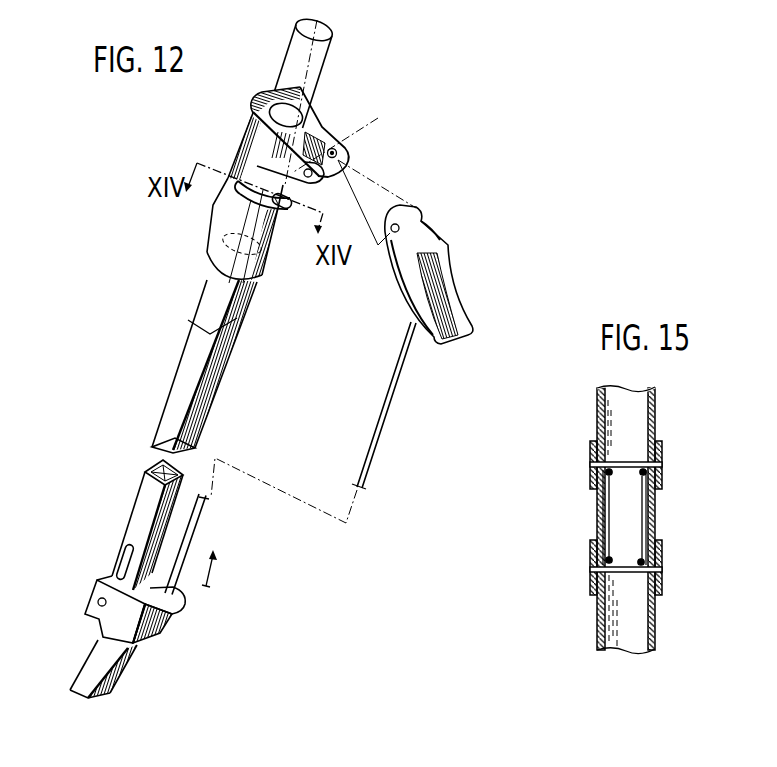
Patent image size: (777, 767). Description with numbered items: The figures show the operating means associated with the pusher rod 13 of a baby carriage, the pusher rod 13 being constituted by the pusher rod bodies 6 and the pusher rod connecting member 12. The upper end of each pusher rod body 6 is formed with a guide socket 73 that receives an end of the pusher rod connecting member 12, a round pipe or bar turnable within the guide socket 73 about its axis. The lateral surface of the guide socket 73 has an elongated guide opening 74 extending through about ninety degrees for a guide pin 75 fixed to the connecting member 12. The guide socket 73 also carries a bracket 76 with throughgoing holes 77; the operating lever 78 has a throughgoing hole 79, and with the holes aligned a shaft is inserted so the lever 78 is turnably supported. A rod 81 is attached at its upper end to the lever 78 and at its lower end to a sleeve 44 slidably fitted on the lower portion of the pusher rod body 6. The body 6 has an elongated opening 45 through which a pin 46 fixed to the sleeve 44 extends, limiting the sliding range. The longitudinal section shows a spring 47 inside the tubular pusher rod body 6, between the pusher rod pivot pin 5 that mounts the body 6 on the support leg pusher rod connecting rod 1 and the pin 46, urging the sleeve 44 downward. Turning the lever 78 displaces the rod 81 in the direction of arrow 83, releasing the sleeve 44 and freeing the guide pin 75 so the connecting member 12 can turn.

In FIG. 12, the pusher rod connecting member 12 is at (328, 58).
In FIG. 12, the pusher rod 13 is at (235, 125).
In FIG. 12, the bracket 76 is at (330, 132).
In FIG. 12, the throughgoing holes 77 is at (344, 151).
In FIG. 12, the throughgoing hole 79 is at (408, 205).
In FIG. 12, the operating lever 78 is at (448, 276).
In FIG. 12, the elongated guide opening 74 is at (238, 193).
In FIG. 12, the guide pin 75 is at (288, 212).
In FIG. 12, the guide socket 73 is at (204, 249).
In FIG. 12, the pusher rod body 6 is at (178, 374).
In FIG. 15, the pusher rod body 6 is at (657, 398).
In FIG. 12, the rod 81 is at (388, 412).
In FIG. 12, the elongated opening 45 is at (120, 557).
In FIG. 15, the elongated opening 45 is at (660, 533).
In FIG. 12, the sleeve 44 is at (88, 587).
In FIG. 15, the sleeve 44 is at (660, 557).
In FIG. 12, the pin 46 is at (98, 603).
In FIG. 15, the pin 46 is at (660, 573).
In FIG. 12, the arrow 83 is at (210, 586).
In FIG. 15, the support leg pusher rod connecting rod 1 is at (661, 447).
In FIG. 15, the pusher rod pivot pin 5 is at (661, 465).
In FIG. 15, the spring 47 is at (645, 513).